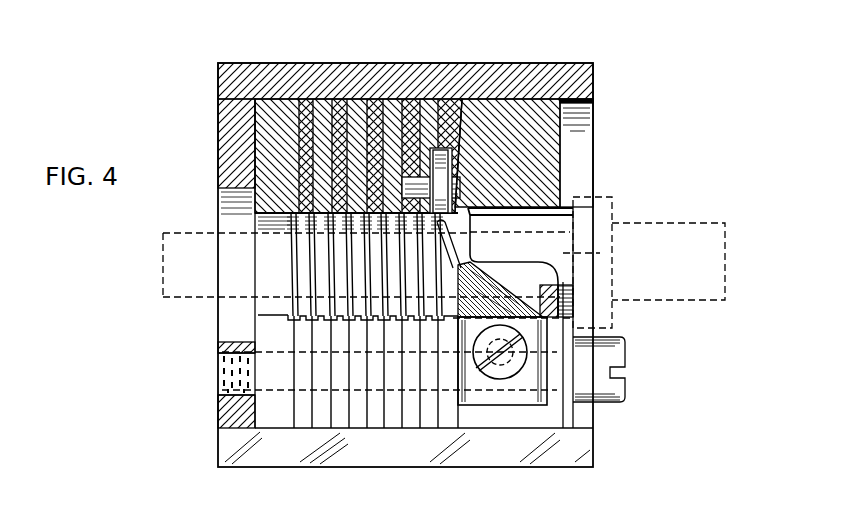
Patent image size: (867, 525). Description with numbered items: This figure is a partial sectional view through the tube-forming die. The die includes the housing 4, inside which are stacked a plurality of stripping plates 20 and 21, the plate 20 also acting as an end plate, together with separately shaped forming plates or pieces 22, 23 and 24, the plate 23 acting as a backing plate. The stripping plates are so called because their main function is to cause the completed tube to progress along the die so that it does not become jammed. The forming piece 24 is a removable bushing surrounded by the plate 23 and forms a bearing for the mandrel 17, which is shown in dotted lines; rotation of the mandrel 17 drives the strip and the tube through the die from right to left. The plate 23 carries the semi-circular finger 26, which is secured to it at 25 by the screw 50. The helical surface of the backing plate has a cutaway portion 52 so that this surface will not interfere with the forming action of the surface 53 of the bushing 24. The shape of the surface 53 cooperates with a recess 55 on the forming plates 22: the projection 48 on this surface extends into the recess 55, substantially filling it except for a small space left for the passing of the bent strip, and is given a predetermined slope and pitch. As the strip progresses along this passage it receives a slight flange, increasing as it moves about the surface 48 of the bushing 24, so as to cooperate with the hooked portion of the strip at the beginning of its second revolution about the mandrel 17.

The housing 4 is at (218, 104).
The mandrel 17 is at (641, 222).
The stripping plate 20 is at (262, 176).
The stripping plates 21 is at (400, 100).
The forming plate 22 is at (447, 99).
The backing plate 23 is at (524, 115).
The forming plate or bushing 24 is at (560, 193).
The securing point of finger 25 is at (490, 400).
The semi-circular finger 26 is at (508, 289).
The projection 48 is at (567, 253).
The screw 50 is at (503, 382).
The cutaway portion 52 is at (492, 216).
The forming surface 53 is at (466, 99).
The recess 55 is at (472, 241).